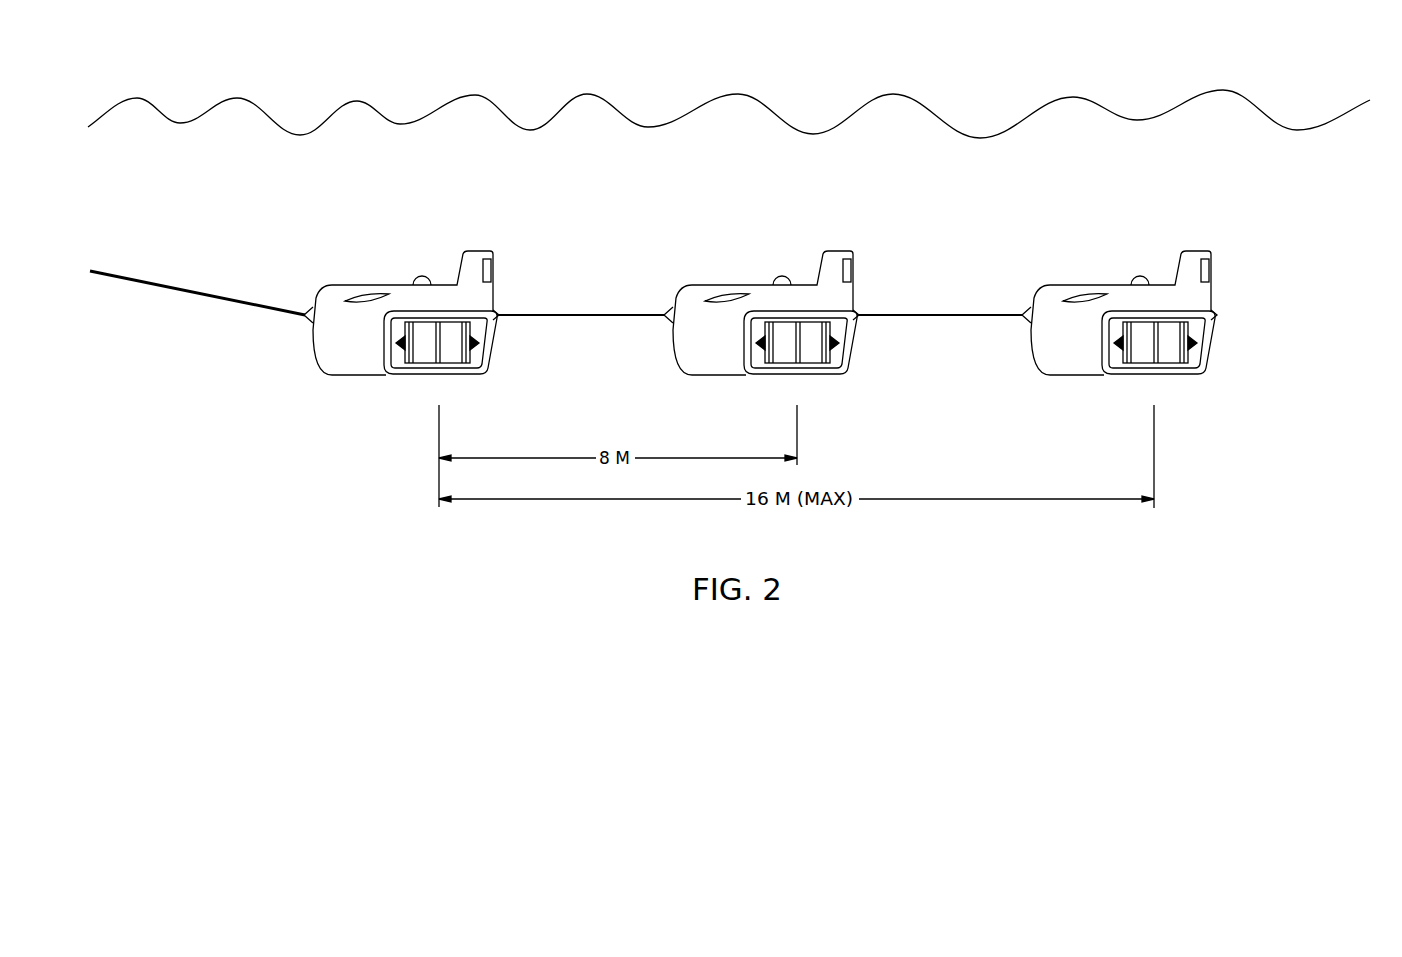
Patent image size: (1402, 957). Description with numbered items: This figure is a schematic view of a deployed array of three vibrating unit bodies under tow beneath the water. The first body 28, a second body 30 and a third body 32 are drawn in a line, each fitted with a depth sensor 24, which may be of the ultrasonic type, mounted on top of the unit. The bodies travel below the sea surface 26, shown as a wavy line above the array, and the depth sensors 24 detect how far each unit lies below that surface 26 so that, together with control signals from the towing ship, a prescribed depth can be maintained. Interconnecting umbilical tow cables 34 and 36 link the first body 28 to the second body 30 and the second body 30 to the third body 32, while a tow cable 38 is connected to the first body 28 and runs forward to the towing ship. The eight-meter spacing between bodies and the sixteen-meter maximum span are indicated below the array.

The depth sensor 24 is at (420, 277).
The surface 26 is at (958, 131).
The first tow body 28 is at (495, 366).
The tow body 30 is at (665, 341).
The tow body 32 is at (1027, 351).
The umbilical tow cable 34 is at (528, 313).
The umbilical tow cable 36 is at (895, 312).
The tow cable 38 is at (123, 270).